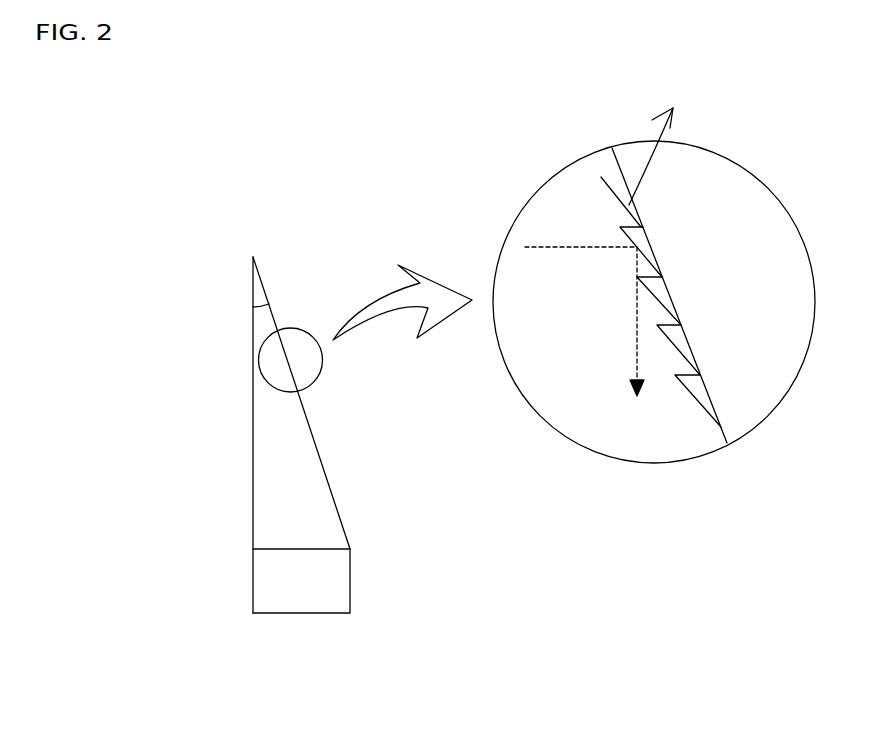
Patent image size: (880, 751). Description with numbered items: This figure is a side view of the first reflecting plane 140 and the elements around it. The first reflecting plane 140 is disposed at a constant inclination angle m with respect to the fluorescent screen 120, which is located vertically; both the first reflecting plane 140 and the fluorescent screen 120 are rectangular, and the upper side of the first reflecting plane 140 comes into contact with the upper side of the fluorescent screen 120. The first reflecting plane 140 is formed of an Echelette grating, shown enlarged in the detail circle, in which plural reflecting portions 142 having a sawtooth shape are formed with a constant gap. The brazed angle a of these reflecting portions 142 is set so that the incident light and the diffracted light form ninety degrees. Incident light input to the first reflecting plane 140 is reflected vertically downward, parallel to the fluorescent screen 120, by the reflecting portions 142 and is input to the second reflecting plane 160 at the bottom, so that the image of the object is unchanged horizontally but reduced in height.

The fluorescent screen 120 is at (252, 430).
The first reflecting plane 140 is at (328, 482).
The second reflecting plane 160 is at (325, 582).
The reflecting portions 142 is at (673, 345).
The inclination angle m is at (255, 307).
The brazed angle a is at (659, 145).